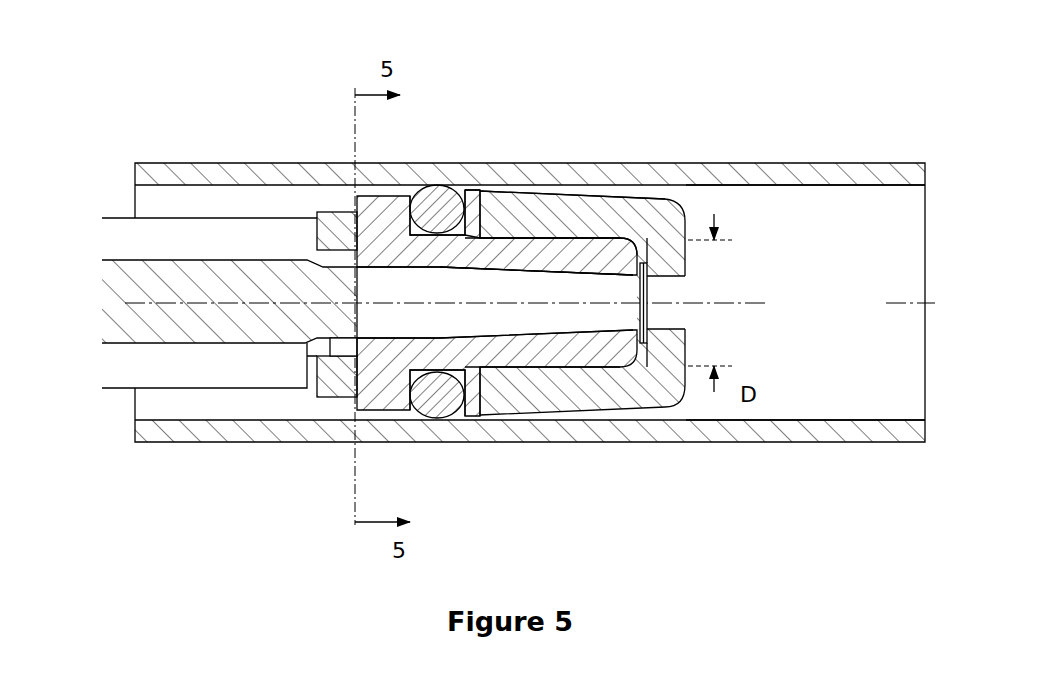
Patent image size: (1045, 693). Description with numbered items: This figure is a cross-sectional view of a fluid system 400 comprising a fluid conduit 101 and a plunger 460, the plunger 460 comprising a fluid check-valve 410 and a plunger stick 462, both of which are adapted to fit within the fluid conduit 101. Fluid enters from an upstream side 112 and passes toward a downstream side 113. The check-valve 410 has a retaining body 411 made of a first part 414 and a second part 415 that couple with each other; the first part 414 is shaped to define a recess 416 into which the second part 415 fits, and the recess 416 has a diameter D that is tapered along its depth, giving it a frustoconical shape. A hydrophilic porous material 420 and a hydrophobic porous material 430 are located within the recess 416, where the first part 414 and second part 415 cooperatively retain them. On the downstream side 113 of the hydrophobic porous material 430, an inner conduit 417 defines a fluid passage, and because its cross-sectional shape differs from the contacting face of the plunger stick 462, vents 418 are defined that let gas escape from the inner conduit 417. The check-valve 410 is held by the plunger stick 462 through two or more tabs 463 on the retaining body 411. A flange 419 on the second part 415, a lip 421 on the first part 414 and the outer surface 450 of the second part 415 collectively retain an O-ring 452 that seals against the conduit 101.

The fluid system 400 is at (283, 65).
The fluid conduit 101 is at (242, 173).
The upstream side 112 is at (803, 227).
The downstream side 113 is at (562, 283).
The fluid check-valve 410 is at (477, 210).
The retaining body 411 is at (547, 190).
The first part 414 is at (550, 395).
The second part 415 is at (368, 377).
The recess 416 is at (627, 237).
The inner conduit 417 is at (457, 233).
The vents 418 is at (348, 347).
The flange 419 is at (414, 196).
The hydrophilic porous material 420 is at (657, 311).
The lip 421 is at (523, 172).
The hydrophobic porous material 430 is at (630, 313).
The outer surface 450 is at (440, 283).
The O-ring 452 is at (437, 203).
The plunger 460 is at (216, 203).
The plunger stick 462 is at (165, 287).
The tabs 463 is at (329, 205).